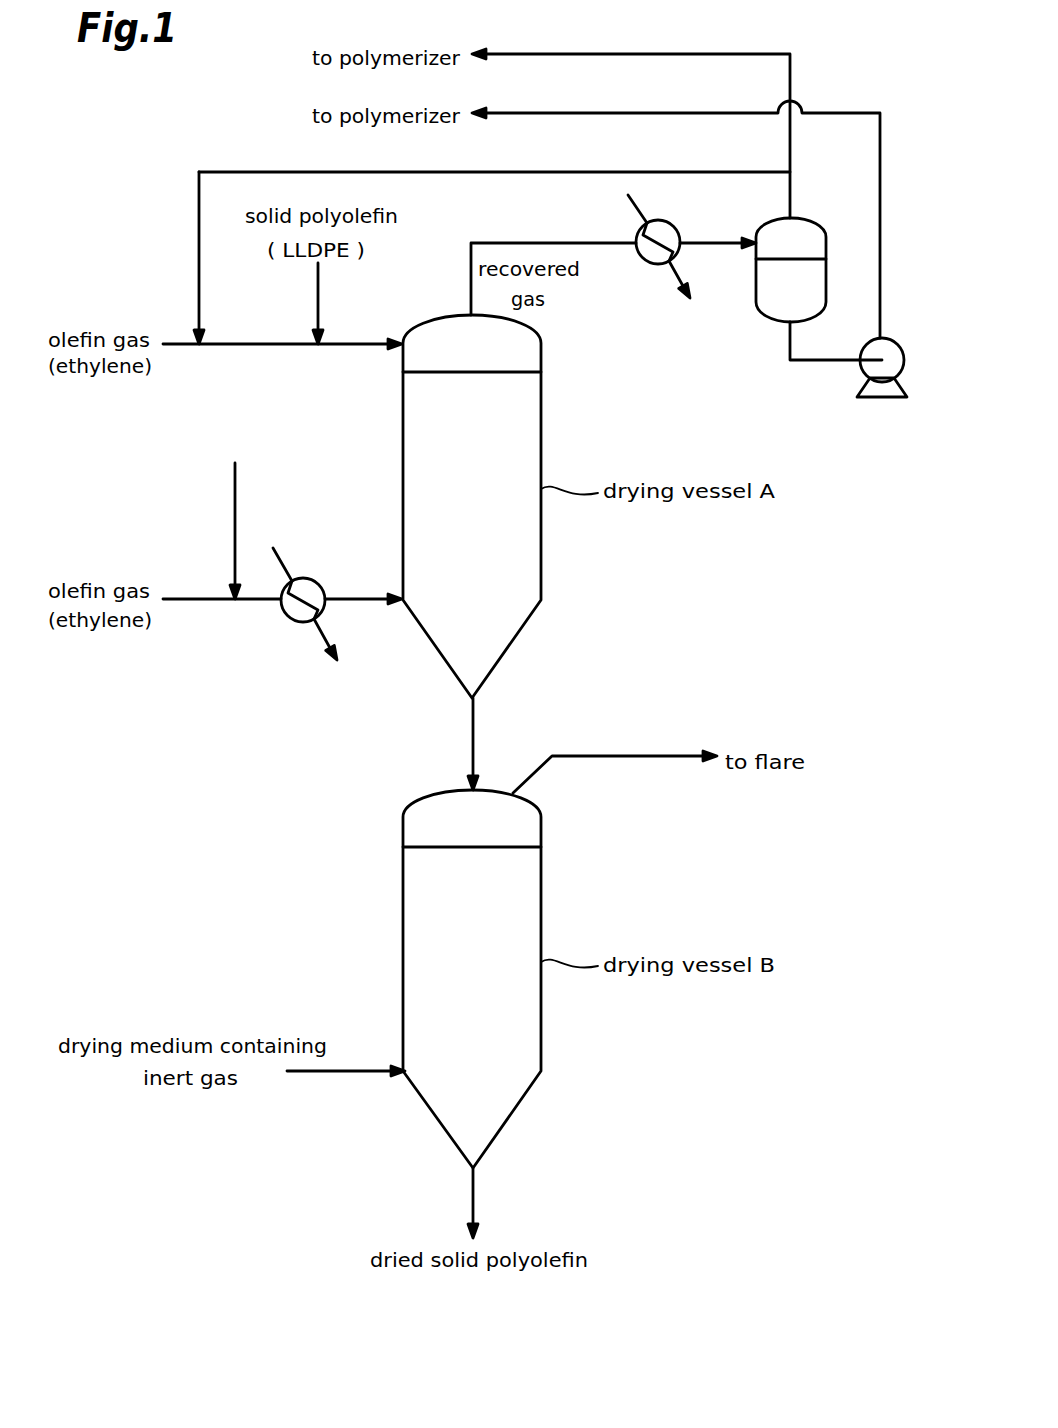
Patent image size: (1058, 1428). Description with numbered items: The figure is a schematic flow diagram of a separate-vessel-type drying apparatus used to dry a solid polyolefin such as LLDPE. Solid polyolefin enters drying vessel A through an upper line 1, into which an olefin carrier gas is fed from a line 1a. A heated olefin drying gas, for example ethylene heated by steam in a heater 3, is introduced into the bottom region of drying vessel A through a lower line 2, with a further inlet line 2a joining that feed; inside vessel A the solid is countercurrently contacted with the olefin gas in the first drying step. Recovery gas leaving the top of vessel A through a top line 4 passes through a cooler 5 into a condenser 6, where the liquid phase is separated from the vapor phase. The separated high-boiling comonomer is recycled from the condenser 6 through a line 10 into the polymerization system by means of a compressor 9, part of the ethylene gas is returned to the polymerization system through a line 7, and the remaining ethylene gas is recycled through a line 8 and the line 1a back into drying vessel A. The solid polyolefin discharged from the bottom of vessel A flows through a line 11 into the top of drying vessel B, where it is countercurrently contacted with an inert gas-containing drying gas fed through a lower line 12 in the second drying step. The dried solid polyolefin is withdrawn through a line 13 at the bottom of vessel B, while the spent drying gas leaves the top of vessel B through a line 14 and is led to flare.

The upper line 1 is at (353, 350).
The line 1a is at (258, 350).
The lower line 2 is at (347, 595).
The recycle gas line joining second olefin gas feed 2a is at (236, 510).
The heater 3 is at (290, 618).
The top line 4 is at (470, 283).
The cooler 5 is at (668, 222).
The condenser 6 is at (806, 222).
The line 7 is at (592, 53).
The line 8 is at (517, 172).
The compressor 9 is at (887, 338).
The line 10 is at (592, 112).
The line 11 is at (475, 727).
The lower line 12 is at (345, 1068).
The line 13 is at (478, 1192).
The line 14 is at (632, 755).